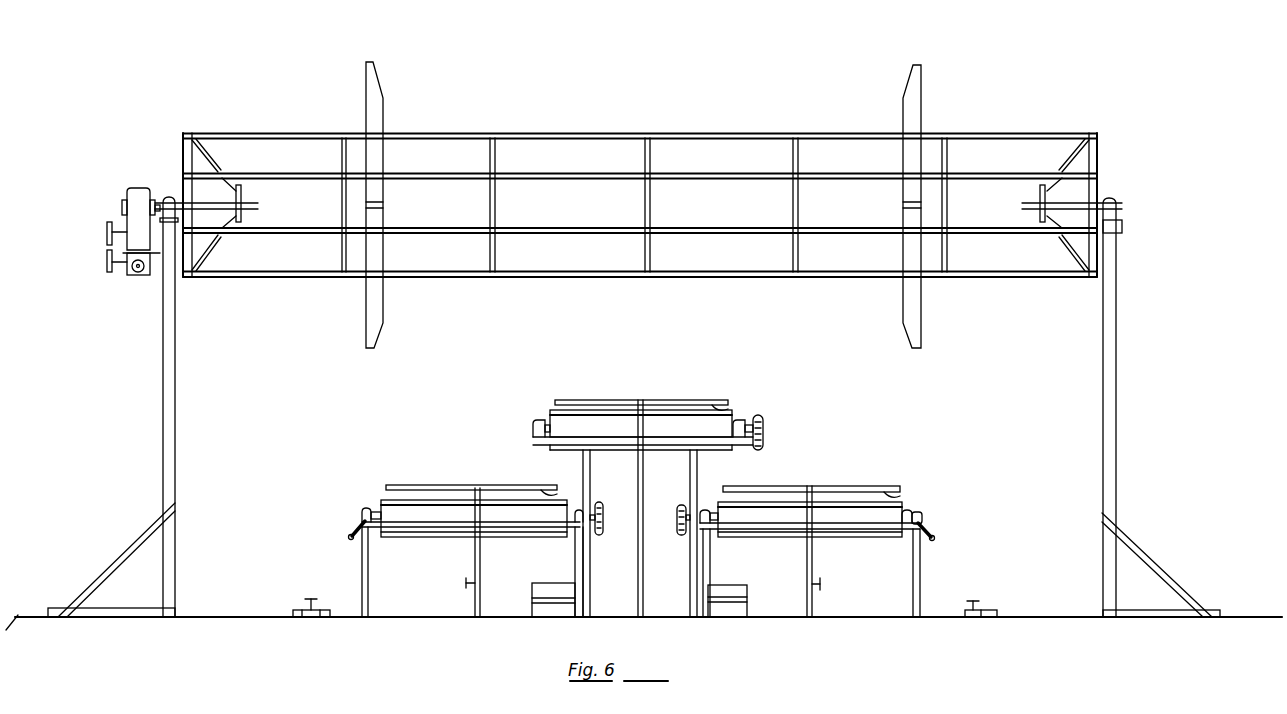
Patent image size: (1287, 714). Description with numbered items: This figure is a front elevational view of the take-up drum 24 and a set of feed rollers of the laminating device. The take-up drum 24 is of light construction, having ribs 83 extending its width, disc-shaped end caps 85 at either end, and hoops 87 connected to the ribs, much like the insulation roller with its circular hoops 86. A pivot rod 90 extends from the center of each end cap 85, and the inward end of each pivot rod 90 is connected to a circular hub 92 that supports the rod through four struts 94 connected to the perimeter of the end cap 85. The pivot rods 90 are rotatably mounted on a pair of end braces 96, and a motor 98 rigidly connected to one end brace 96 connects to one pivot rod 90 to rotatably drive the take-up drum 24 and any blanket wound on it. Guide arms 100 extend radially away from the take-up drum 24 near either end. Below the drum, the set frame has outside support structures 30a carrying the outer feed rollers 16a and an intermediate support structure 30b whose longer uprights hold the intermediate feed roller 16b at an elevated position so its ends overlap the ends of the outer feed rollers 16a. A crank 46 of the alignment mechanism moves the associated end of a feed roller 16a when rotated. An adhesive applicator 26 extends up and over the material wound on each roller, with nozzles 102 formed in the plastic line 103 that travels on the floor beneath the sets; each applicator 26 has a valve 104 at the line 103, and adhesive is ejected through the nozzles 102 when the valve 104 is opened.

The take-up drum 24 is at (1097, 135).
The adhesive applicator 26 is at (663, 400).
The outer feed roller 16a is at (388, 512).
The intermediate feed roller 16b is at (557, 423).
The outside support structure 30a is at (361, 588).
The intermediate support structure 30b is at (592, 590).
The crank 46 is at (352, 532).
The ribs 83 is at (522, 172).
The end caps 85 is at (182, 148).
The circular hoops 86 is at (764, 438).
The hoops 87 is at (661, 148).
The pivot rod 90 is at (259, 204).
The circular hub 92 is at (243, 192).
The struts 94 is at (222, 240).
The end brace 96 is at (163, 450).
The motor 98 is at (123, 222).
The guide arms 100 is at (378, 74).
The nozzles 102 is at (727, 407).
The plastic line 103 is at (480, 559).
The valve 104 is at (465, 578).